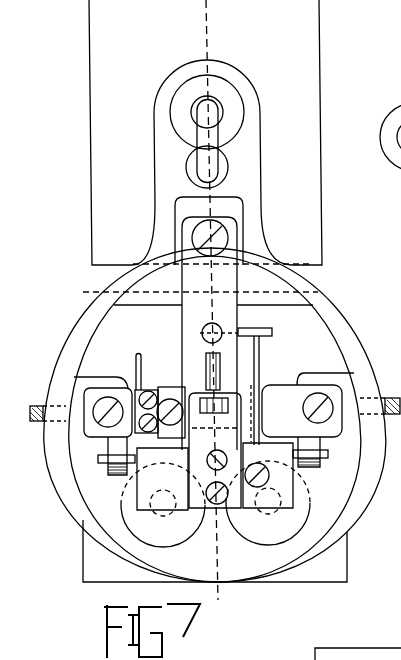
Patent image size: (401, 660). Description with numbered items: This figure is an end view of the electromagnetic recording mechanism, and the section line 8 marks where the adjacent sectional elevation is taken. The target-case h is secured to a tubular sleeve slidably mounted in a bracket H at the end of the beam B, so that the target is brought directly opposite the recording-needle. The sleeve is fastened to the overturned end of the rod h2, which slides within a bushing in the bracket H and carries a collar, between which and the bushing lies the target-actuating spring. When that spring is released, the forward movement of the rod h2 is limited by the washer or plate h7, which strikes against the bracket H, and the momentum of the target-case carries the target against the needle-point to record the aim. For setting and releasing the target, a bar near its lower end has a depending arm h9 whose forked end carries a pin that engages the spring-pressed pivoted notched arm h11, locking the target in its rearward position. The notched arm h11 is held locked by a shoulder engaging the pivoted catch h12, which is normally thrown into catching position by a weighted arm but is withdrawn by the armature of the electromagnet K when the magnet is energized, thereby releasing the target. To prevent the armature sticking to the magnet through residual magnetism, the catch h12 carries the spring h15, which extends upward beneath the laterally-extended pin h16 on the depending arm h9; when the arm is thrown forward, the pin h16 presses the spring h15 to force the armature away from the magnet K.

The section line 8 is at (218, 305).
The target-case h is at (205, 132).
The bracket H is at (262, 172).
The washer or plate h7 is at (234, 107).
The rod h2 is at (210, 147).
The depending arm h9 is at (218, 318).
The laterally-extended pin h16 is at (252, 328).
The spring h15 is at (259, 368).
The notched arm h11 is at (200, 397).
The pivoted catch h12 is at (216, 461).
The gun beam or carrier B is at (60, 483).
The electromagnet K is at (238, 520).